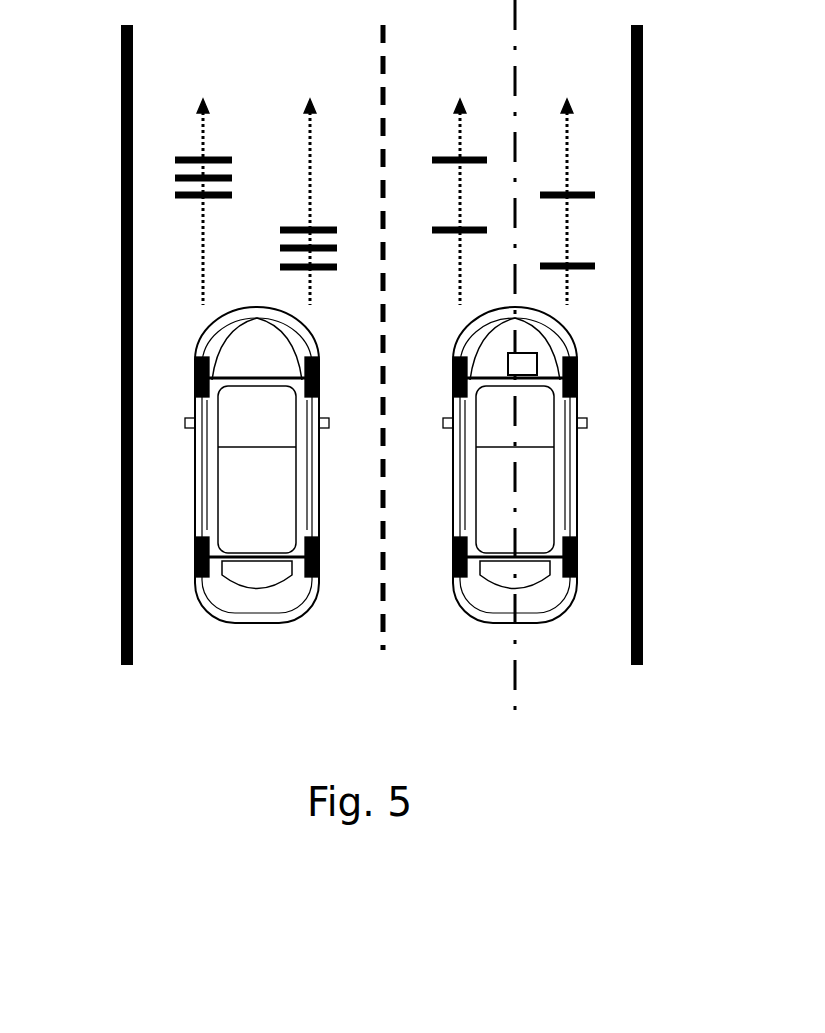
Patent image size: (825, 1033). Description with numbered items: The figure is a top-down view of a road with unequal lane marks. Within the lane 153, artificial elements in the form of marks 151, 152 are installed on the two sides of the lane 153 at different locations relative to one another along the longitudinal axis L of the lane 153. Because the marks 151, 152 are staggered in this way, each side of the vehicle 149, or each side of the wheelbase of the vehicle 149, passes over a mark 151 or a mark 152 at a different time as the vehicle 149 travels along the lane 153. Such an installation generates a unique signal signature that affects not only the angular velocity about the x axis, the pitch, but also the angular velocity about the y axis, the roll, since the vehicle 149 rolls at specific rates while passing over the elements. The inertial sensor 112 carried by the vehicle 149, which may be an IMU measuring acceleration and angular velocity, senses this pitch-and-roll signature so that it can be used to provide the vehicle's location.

The lane 153 is at (520, 75).
The mark 152 is at (487, 230).
The mark 151 is at (582, 266).
The vehicle 149 is at (533, 475).
The inertial sensor 112 is at (537, 360).